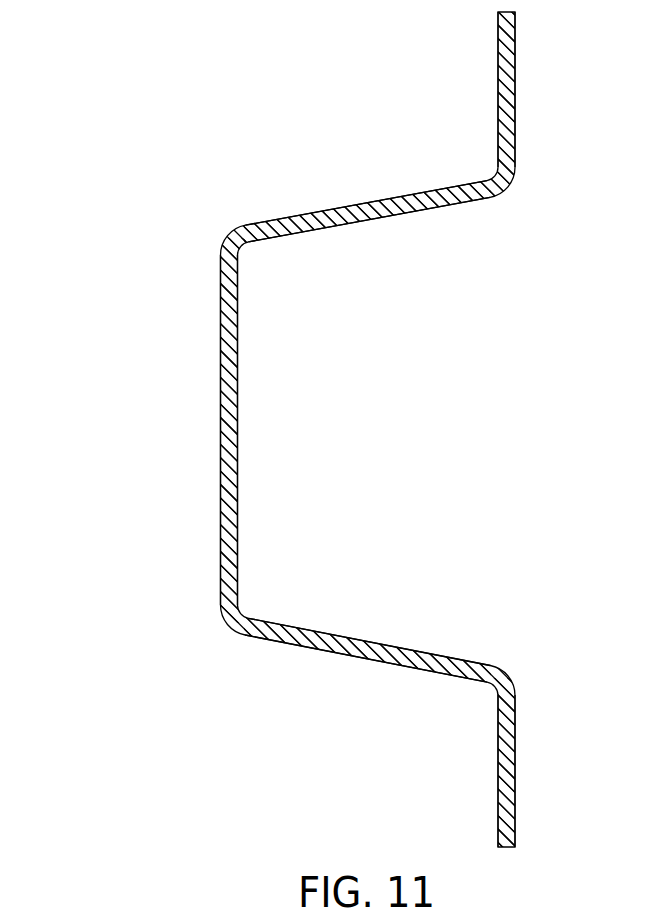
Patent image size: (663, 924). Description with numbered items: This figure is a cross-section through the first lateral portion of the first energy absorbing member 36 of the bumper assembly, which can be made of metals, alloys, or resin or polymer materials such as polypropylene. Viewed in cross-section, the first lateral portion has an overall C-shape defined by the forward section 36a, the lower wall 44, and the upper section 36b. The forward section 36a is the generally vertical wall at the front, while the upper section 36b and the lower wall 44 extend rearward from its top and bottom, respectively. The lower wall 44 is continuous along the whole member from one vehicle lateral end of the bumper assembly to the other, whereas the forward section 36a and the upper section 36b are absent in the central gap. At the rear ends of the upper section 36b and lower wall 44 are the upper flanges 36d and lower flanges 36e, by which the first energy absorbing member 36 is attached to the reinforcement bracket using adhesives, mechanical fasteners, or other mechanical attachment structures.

The first energy absorbing member 36 is at (157, 194).
The forward section 36a is at (220, 389).
The upper section 36b is at (344, 203).
The upper flanges 36d is at (497, 91).
The lower flanges 36e is at (498, 778).
The lower wall 44 is at (305, 648).